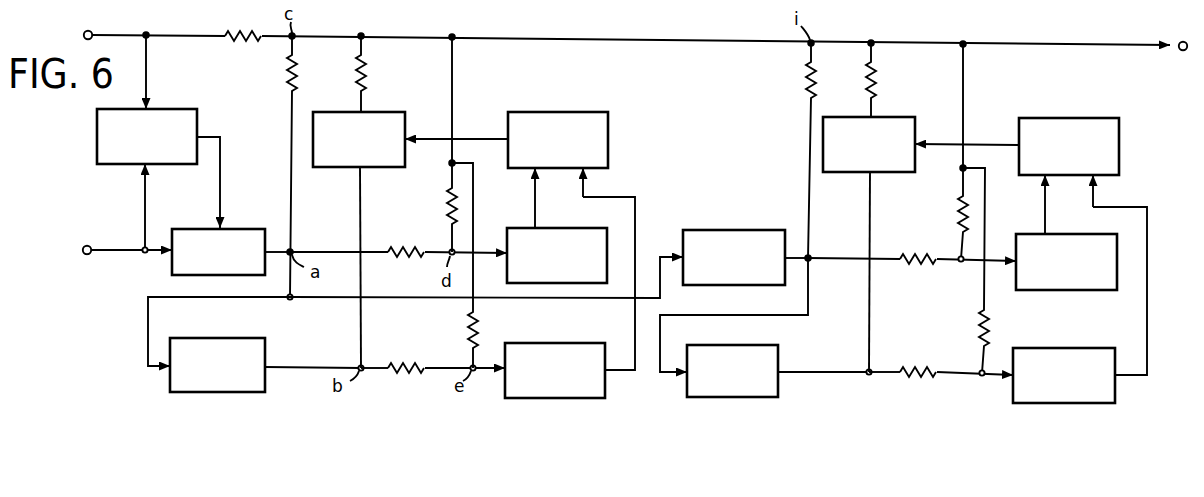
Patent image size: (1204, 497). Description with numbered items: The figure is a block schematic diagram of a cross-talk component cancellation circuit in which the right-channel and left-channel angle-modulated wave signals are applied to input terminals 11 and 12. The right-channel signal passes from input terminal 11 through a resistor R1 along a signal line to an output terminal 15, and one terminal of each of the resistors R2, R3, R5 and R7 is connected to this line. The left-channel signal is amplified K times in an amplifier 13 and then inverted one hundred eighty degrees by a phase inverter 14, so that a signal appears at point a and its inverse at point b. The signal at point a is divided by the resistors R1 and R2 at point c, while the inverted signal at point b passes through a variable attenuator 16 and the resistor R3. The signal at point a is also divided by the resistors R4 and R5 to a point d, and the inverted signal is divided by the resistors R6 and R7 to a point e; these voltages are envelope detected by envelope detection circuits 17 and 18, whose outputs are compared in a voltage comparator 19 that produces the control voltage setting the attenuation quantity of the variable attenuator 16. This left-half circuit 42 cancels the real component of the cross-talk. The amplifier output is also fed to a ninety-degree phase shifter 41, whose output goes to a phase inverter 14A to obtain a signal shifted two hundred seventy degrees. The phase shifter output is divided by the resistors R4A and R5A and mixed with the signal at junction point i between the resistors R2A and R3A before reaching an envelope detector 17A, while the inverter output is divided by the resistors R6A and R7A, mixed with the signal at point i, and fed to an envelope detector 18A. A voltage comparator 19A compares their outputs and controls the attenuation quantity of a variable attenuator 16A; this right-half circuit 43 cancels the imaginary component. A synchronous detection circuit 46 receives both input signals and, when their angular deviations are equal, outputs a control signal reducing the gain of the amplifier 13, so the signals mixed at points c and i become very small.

The input terminal 11 is at (86, 31).
The input terminal 12 is at (87, 246).
The amplifier 13 is at (193, 229).
The phase inverter 14 is at (226, 338).
The phase inverter 14A is at (768, 345).
The output terminal 15 is at (1181, 42).
The variable attenuator 16 is at (394, 111).
The variable attenuator 16A is at (905, 116).
The envelope detection circuit 17 is at (505, 228).
The envelope detector 17A is at (1030, 234).
The envelope detection circuit 18 is at (553, 343).
The envelope detector 18A is at (1060, 348).
The voltage comparator 19 is at (555, 111).
The voltage comparator 19A is at (1065, 118).
The 90-degree phase shifter 41 is at (728, 229).
The circuit 42 is at (349, 6).
The circuit 43 is at (906, 6).
The synchronous detection circuit 46 is at (179, 109).
The resistor R1 is at (243, 49).
The resistor R2 is at (304, 166).
The resistor R3 is at (373, 74).
The resistor R4 is at (406, 266).
The resistor R5 is at (435, 144).
The resistor R6 is at (405, 381).
The resistor R7 is at (455, 265).
The resistor R2A is at (829, 150).
The resistor R3A is at (889, 80).
The resistor R4A is at (919, 271).
The resistor R5A is at (940, 151).
The resistor R6A is at (918, 385).
The resistor R7A is at (963, 270).